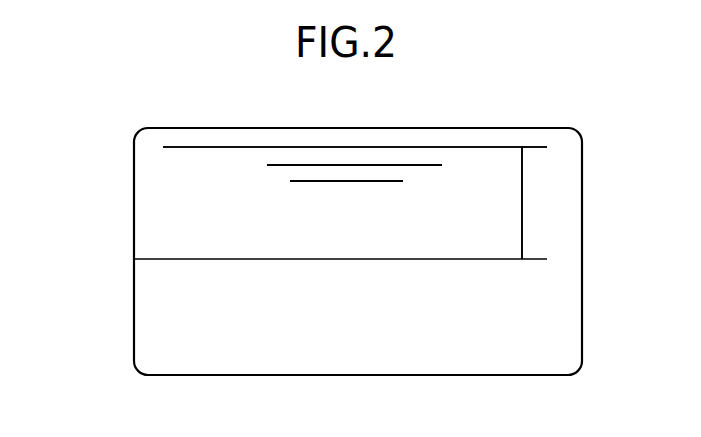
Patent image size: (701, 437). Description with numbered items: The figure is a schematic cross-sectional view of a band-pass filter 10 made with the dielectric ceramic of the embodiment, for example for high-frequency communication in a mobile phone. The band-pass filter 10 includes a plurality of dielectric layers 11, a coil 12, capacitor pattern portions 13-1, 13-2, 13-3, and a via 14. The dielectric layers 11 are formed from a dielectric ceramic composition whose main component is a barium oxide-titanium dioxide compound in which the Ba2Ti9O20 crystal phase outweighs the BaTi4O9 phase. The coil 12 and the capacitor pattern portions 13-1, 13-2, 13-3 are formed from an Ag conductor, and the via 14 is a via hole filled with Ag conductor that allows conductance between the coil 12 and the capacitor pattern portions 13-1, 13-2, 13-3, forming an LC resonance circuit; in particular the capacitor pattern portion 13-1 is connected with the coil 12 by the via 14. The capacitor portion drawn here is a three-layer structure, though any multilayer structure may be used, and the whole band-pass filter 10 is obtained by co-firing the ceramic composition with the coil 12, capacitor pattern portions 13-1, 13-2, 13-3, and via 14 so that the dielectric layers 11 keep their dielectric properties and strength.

The band-pass filter 10 is at (601, 142).
The dielectric layers 11 is at (522, 327).
The coil 12 is at (240, 259).
The capacitor pattern portion 13-1 is at (166, 137).
The capacitor pattern portion 13-2 is at (278, 156).
The capacitor pattern portion 13-3 is at (302, 174).
The via 14 is at (523, 199).